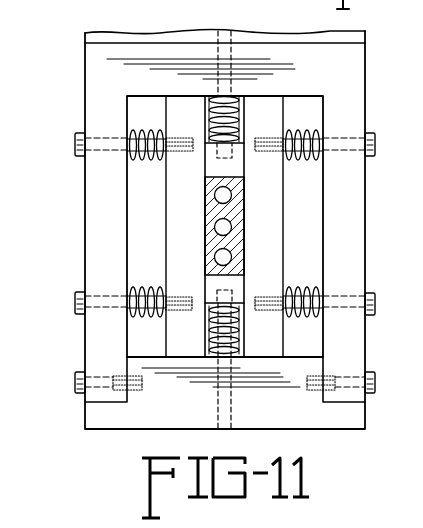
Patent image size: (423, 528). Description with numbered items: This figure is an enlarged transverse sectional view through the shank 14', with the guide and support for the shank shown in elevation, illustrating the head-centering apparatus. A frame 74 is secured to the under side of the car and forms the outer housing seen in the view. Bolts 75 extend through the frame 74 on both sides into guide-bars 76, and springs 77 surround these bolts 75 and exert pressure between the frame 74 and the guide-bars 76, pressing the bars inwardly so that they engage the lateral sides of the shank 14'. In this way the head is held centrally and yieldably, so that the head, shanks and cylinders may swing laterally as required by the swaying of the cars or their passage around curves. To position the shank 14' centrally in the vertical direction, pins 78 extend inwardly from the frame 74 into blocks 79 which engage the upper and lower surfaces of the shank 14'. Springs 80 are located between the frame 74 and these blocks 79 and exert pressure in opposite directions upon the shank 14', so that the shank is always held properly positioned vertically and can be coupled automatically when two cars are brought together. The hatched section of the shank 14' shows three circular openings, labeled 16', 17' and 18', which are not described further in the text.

The frame 74 is at (352, 80).
The bolts 75 is at (75, 140).
The guide-bars 76 is at (167, 180).
The springs 77 is at (141, 130).
The pins 78 is at (206, 118).
The blocks 79 is at (206, 165).
The springs 80 is at (239, 118).
The shank 14' is at (239, 222).
The bore 16' is at (201, 198).
The bore 17' is at (201, 232).
The bore 18' is at (201, 262).